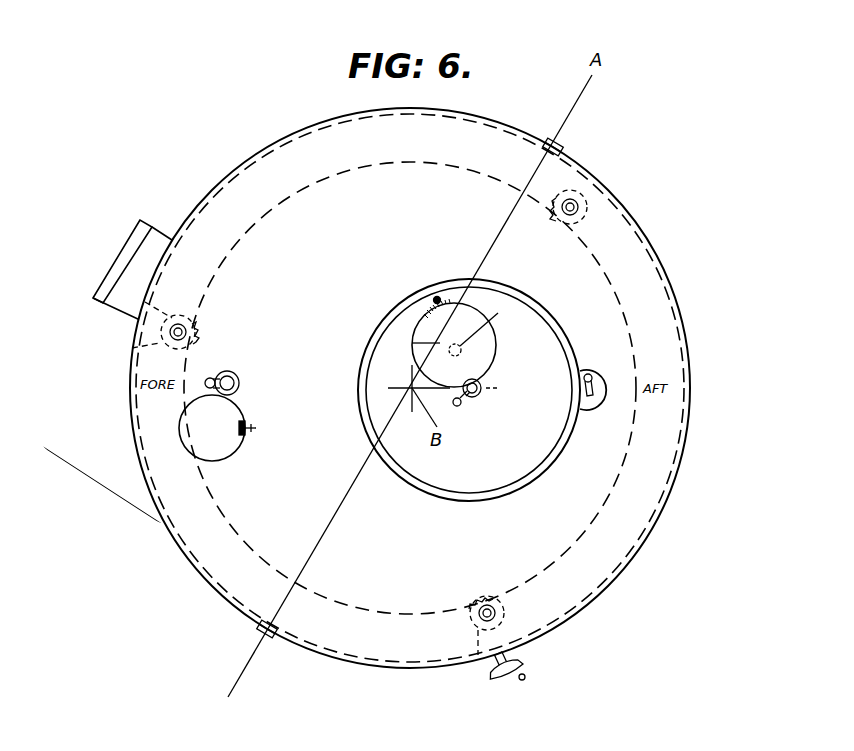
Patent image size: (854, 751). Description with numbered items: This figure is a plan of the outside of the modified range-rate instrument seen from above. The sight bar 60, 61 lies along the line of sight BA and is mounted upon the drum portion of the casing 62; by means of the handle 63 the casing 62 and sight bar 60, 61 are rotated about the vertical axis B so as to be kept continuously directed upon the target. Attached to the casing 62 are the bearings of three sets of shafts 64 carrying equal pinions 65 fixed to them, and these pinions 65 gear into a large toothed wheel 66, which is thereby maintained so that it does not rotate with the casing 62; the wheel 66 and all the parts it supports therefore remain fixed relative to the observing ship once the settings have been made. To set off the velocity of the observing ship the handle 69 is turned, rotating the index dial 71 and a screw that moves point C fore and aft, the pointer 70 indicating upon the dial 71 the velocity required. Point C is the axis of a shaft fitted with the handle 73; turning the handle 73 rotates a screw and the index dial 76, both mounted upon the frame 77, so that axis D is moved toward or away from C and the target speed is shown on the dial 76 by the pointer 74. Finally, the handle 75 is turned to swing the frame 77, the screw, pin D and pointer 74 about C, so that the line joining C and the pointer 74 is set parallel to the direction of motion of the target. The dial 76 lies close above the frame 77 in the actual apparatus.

The sight bar 60 is at (264, 640).
The sight bar 61 is at (552, 142).
The casing 62 is at (652, 537).
The handle 63 is at (524, 679).
The shafts 64 is at (177, 327).
The pinions 65 is at (181, 329).
The toothed wheel 66 is at (232, 252).
The handle 69 is at (206, 381).
The pointer 70 is at (242, 434).
The index dial 71 is at (197, 453).
The handle 73 is at (460, 403).
The pointer 74 is at (438, 298).
The handle 75 is at (593, 371).
The index dial 76 is at (493, 330).
The frame 77 is at (498, 470).